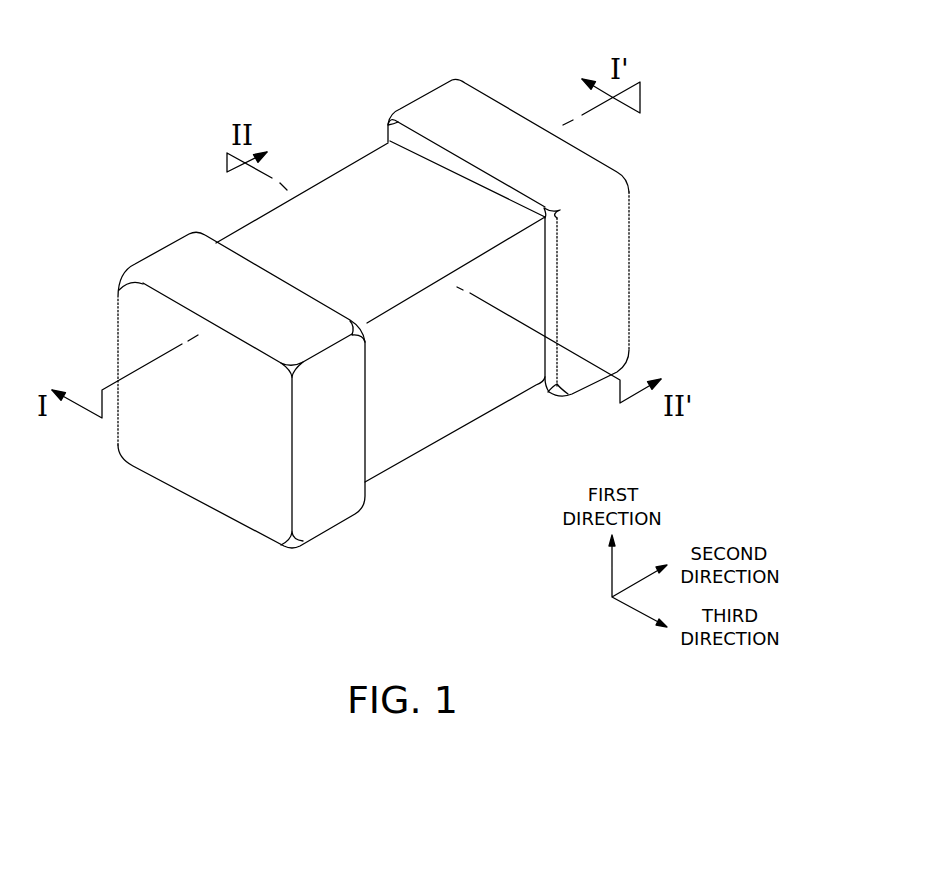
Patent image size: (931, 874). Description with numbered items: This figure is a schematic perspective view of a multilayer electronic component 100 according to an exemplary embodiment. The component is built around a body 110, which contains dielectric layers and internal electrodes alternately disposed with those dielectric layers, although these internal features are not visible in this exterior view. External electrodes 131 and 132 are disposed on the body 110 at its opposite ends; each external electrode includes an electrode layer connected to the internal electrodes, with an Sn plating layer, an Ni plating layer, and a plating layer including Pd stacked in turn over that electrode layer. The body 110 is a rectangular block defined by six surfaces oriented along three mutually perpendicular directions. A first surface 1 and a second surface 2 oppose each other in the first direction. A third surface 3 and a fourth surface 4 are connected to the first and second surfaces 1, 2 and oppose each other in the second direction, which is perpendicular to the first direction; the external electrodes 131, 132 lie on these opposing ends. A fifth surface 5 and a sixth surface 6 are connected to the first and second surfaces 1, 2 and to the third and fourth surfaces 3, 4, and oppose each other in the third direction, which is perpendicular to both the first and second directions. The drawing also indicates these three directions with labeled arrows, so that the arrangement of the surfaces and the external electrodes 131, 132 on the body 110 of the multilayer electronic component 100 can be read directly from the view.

The multilayer electronic component 100 is at (157, 50).
The body 110 is at (255, 248).
The external electrode 131 is at (177, 265).
The external electrode 132 is at (432, 117).
The first surface 1 is at (416, 400).
The second surface 2 is at (393, 196).
The third surface 3 is at (212, 447).
The fourth surface 4 is at (578, 255).
The fifth surface 5 is at (339, 220).
The sixth surface 6 is at (472, 372).